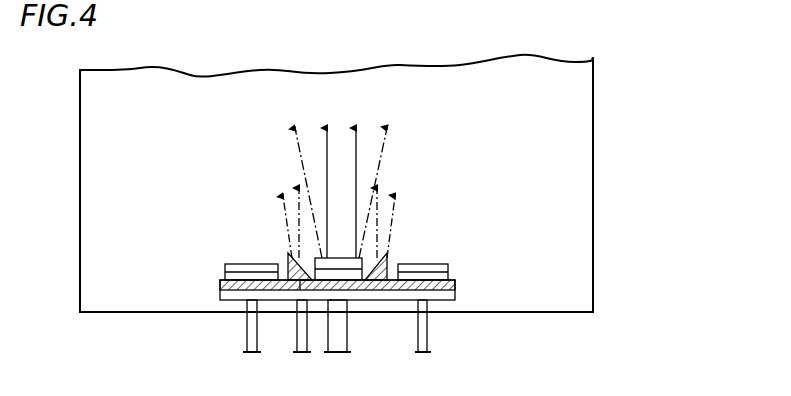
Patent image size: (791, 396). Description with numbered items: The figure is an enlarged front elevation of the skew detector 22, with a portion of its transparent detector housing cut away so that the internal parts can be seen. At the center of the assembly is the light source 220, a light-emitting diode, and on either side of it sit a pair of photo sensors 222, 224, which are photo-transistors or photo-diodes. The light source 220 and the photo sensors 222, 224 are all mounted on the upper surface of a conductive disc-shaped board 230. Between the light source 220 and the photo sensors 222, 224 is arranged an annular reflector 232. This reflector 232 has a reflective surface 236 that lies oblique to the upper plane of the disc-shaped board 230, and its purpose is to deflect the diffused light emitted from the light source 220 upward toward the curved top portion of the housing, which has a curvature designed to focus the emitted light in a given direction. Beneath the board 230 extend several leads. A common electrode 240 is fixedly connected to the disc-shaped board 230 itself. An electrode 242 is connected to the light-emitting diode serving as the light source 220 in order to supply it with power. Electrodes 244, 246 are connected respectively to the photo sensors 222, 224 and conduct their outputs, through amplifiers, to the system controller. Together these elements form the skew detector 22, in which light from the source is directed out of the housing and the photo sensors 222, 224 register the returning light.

The skew detector 22 is at (582, 174).
The light source 220 is at (348, 265).
The photo sensor 222 is at (225, 266).
The photo sensor 224 is at (437, 266).
The conductive disc-shaped board 230 is at (222, 283).
The annular reflector 232 is at (287, 262).
The reflective surface 236 is at (300, 283).
The common electrode 240 is at (342, 336).
The electrode 242 is at (308, 338).
The electrode 244 is at (250, 337).
The electrode 246 is at (423, 335).